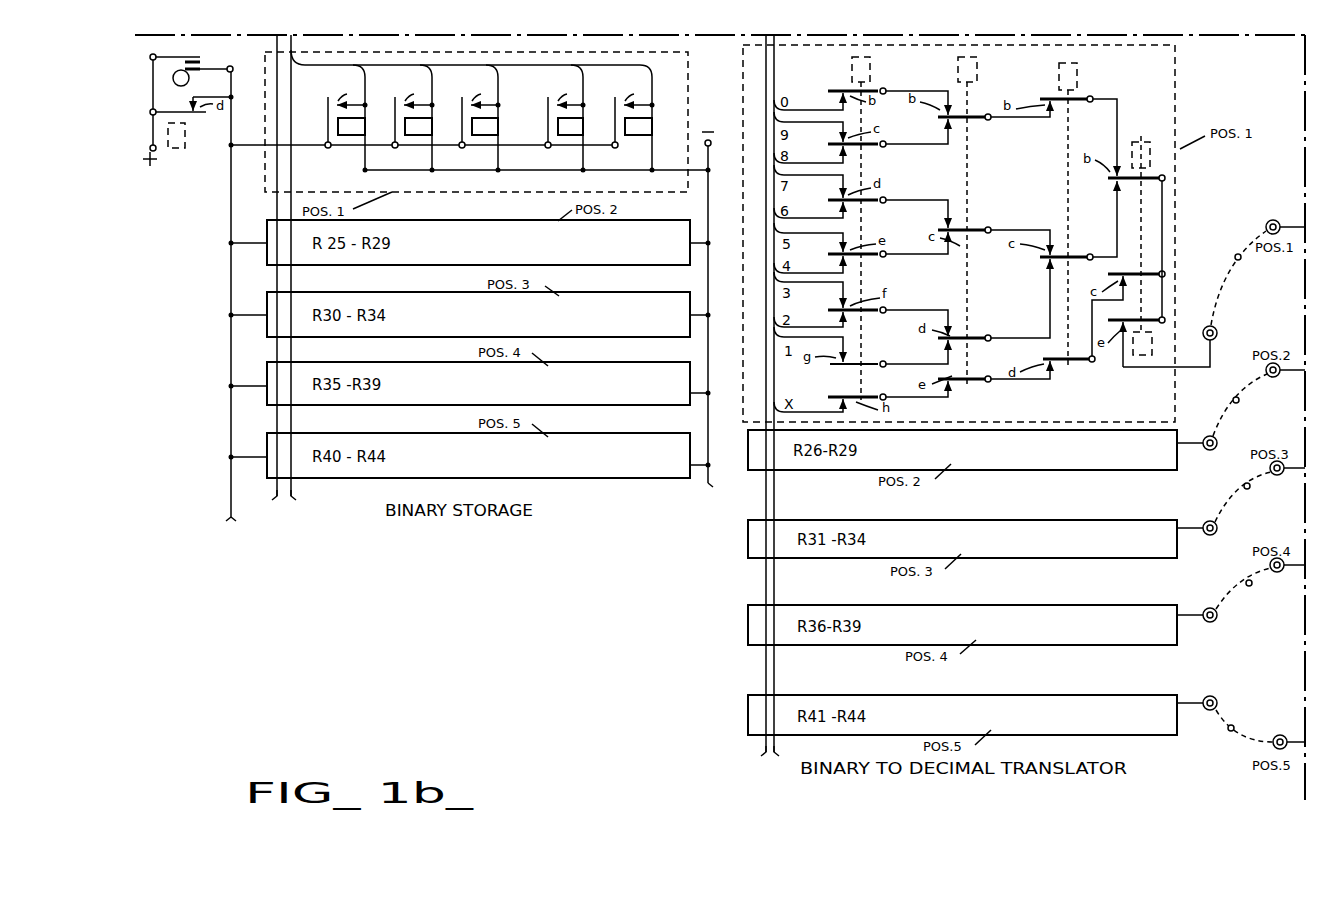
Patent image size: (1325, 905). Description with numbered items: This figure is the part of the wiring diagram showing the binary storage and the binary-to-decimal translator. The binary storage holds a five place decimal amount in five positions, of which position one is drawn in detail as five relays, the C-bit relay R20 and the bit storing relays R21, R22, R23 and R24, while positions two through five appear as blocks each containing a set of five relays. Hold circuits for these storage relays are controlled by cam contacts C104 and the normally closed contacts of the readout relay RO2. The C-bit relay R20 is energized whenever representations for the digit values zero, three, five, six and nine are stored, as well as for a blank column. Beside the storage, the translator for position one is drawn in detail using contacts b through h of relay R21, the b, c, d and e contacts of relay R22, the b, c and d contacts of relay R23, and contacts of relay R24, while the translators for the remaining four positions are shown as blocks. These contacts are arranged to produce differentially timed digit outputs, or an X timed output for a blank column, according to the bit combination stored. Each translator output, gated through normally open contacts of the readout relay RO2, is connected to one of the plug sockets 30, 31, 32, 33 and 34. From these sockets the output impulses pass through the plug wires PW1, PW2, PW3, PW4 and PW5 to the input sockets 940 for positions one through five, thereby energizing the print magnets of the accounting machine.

The cam contacts C104 is at (221, 56).
The readout relay RO2 is at (182, 143).
The binary storage relay R20 is at (352, 138).
The binary storage relay R21 is at (420, 138).
The binary storage relay R22 is at (488, 138).
The binary storage relay R23 is at (572, 138).
The binary storage relay R24 is at (640, 138).
The plug socket 30 is at (1217, 331).
The plug socket 31 is at (1217, 440).
The plug socket 32 is at (1217, 526).
The plug socket 33 is at (1217, 618).
The plug socket 34 is at (1216, 698).
The plug sockets 940 is at (1270, 220).
The plug wire PW1 is at (1236, 252).
The plug wire PW2 is at (1233, 400).
The plug wire PW3 is at (1244, 485).
The plug wire PW4 is at (1246, 584).
The plug wire PW5 is at (1235, 727).